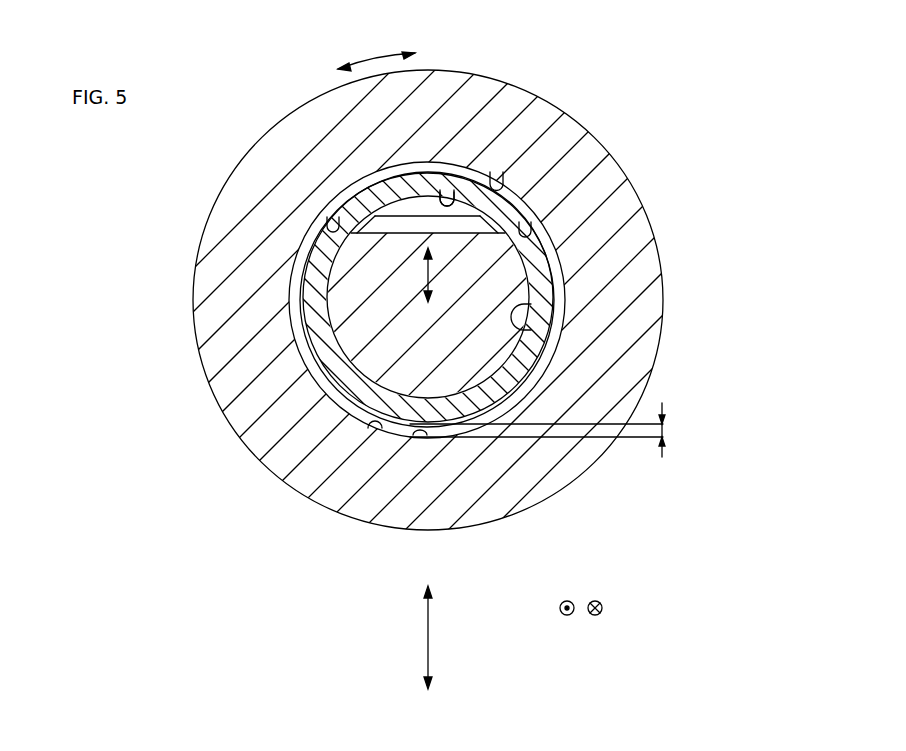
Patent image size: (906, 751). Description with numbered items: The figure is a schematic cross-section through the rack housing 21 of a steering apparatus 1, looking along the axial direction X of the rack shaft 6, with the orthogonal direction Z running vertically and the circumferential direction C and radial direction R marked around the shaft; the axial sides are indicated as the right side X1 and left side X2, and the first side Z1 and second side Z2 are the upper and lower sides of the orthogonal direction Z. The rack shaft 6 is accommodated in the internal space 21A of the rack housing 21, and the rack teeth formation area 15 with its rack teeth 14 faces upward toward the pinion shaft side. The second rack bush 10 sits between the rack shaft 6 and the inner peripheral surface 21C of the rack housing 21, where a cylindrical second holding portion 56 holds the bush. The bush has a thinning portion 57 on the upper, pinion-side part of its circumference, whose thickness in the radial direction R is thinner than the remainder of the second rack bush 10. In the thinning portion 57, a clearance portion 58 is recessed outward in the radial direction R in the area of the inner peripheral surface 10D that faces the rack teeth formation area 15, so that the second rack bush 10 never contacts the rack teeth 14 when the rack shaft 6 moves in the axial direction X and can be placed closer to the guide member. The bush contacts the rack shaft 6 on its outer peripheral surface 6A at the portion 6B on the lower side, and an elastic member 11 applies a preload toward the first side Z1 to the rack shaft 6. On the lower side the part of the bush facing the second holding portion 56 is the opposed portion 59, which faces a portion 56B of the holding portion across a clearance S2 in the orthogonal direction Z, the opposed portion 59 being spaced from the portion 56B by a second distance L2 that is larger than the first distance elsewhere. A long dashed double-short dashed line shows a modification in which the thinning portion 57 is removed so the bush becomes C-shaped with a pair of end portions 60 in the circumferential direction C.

The electric device 1 is at (633, 160).
The rack shaft 6 is at (360, 327).
The outer peripheral surface 6A is at (362, 340).
The portion 6B is at (388, 430).
The second rack bush 10 is at (564, 328).
The inner peripheral surface 10D is at (522, 306).
The elastic member 11 is at (558, 273).
The rack teeth 14 is at (393, 223).
The rack teeth formation area 15 is at (411, 240).
The rack housing 21 is at (593, 157).
The internal space 21A is at (335, 410).
The inner peripheral surface 21C is at (493, 167).
The second holding portion 56 is at (378, 430).
The portion 56B is at (422, 432).
The thinning portion 57 is at (422, 173).
The clearance portion 58 is at (462, 192).
The opposed portion 59 is at (428, 407).
The end portions 60 is at (330, 213).
The clearance S2 is at (428, 432).
The second distance L2 is at (666, 431).
The circumferential direction C is at (375, 53).
The radial direction R is at (430, 270).
The orthogonal direction Z is at (480, 600).
The first side Z1 is at (432, 613).
The second side Z2 is at (432, 655).
The axial direction X is at (538, 660).
The right side X1 is at (595, 615).
The left side X2 is at (565, 615).